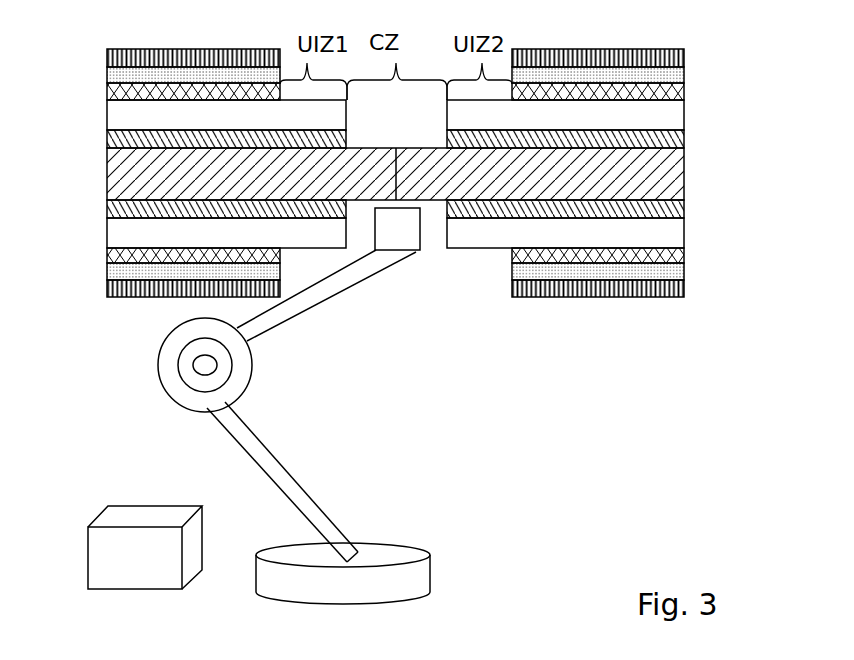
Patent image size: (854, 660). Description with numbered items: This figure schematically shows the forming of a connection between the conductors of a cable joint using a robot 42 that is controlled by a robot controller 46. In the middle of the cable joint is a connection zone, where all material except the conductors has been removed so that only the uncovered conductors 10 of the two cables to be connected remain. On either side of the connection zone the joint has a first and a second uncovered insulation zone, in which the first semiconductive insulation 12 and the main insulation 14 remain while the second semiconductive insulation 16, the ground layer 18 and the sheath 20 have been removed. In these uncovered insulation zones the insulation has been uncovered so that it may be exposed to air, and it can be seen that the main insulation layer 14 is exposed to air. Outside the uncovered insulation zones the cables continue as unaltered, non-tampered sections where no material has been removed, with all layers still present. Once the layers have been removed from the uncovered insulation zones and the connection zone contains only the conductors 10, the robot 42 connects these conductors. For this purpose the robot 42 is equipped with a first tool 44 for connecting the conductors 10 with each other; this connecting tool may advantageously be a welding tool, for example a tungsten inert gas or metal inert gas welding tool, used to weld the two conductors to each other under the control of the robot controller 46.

The conductors 10 is at (688, 183).
The first semiconductive insulation 12 is at (685, 128).
The main insulation 14 is at (680, 240).
The second semiconductive insulation 16 is at (685, 74).
The ground layer 18 is at (685, 273).
The sheath 20 is at (668, 50).
The robot 42 is at (283, 474).
The first tool 44 is at (420, 234).
The robot controller 46 is at (88, 547).